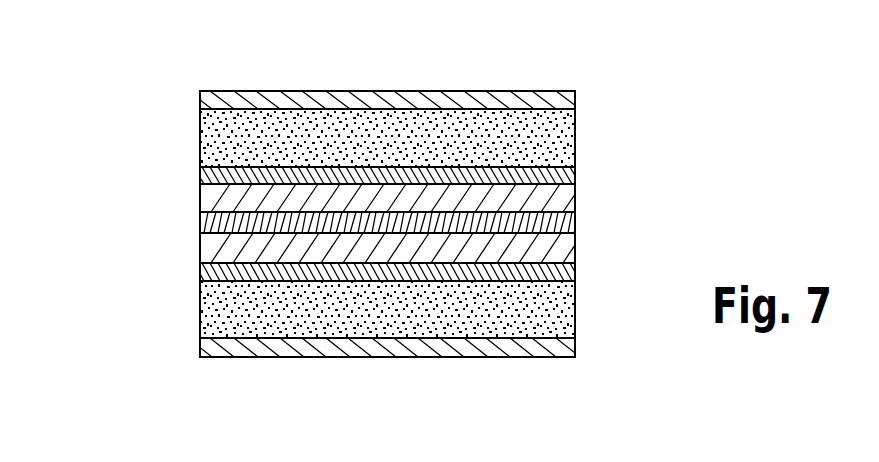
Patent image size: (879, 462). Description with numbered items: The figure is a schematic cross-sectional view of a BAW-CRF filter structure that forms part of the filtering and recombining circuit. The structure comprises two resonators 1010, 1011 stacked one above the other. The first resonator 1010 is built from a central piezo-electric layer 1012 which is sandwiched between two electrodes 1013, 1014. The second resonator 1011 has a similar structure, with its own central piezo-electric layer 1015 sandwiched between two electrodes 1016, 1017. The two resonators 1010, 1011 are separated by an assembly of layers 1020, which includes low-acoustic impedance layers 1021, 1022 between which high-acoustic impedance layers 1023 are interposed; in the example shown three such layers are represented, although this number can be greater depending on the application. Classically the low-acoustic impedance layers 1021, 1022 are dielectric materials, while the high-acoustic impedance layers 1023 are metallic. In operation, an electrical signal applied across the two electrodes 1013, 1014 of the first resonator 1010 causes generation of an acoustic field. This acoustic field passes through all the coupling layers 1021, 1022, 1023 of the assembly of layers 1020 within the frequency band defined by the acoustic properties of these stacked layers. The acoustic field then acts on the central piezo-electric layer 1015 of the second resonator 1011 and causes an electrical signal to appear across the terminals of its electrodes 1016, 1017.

The resonator 1010 is at (312, 90).
The second resonator 1011 is at (312, 360).
The central piezo-electric layer 1012 is at (337, 130).
The electrode 1013 is at (245, 93).
The electrode 1014 is at (420, 167).
The central piezo-electric layer 1015 is at (447, 315).
The electrode 1016 is at (350, 347).
The electrode 1017 is at (490, 275).
The assembly of layers 1020 is at (362, 223).
The low-acoustic impedance layer 1021 is at (548, 197).
The low-acoustic impedance layer 1022 is at (558, 255).
The high-acoustic impedance layer 1023 is at (557, 226).